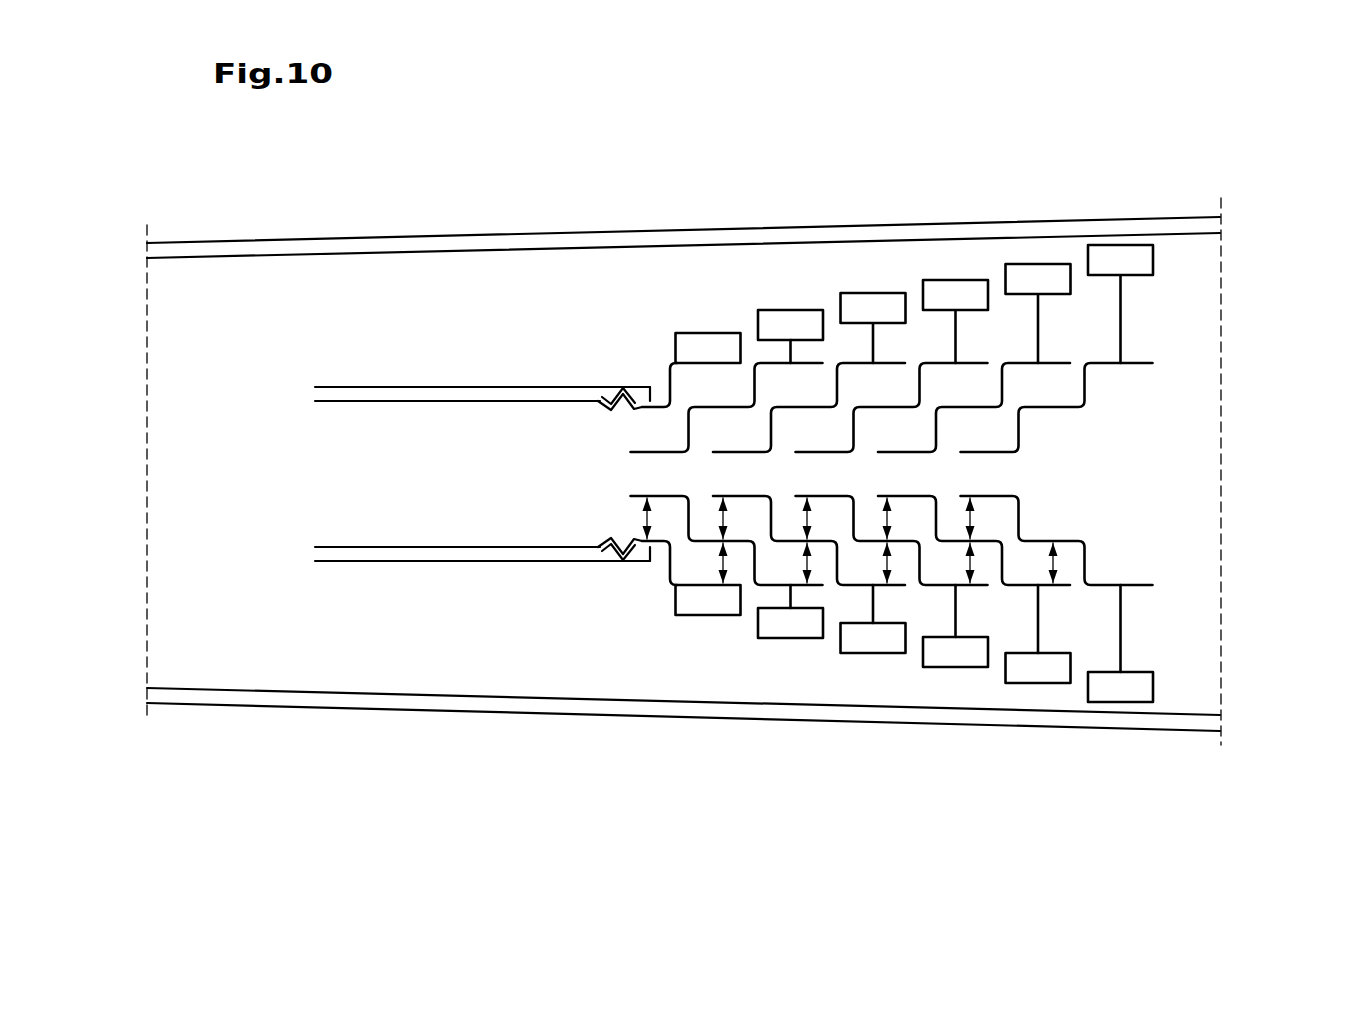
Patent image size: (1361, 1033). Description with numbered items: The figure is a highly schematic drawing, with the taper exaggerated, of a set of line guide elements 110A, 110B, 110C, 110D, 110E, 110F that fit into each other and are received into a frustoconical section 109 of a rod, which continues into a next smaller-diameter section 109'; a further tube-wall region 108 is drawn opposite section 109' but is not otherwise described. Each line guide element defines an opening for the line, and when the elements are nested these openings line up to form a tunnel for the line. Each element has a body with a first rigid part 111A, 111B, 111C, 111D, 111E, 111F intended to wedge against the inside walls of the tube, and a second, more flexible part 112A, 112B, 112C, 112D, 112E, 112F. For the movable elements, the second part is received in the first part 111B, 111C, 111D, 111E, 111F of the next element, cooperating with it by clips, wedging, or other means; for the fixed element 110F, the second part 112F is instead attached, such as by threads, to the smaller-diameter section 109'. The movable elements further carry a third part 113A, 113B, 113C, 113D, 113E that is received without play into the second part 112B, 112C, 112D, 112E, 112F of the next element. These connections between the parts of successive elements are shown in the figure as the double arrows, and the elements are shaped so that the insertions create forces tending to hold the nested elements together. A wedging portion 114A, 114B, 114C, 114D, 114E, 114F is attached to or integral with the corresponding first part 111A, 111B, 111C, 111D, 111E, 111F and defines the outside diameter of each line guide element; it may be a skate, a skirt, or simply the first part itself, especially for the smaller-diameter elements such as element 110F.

The second electrode layer 108 is at (596, 491).
The frustoconical section 109 is at (683, 445).
The next smaller-diameter section 109' is at (481, 360).
The line guide element 110A is at (1141, 338).
The line guide element 110B is at (1042, 286).
The line guide element 110C is at (930, 283).
The line guide element 110D is at (822, 281).
The line guide element 110E is at (730, 278).
The fixed line guide element 110F is at (650, 295).
The first rigid part 111A is at (1137, 587).
The first rigid part 111B is at (1060, 587).
The first rigid part 111C is at (977, 588).
The first rigid part 111D is at (862, 590).
The first rigid part 111E is at (778, 590).
The first rigid part 111F is at (639, 609).
The second more flexible part 112A is at (1067, 540).
The second more flexible part 112B is at (988, 541).
The second more flexible part 112C is at (905, 545).
The second more flexible part 112D is at (820, 543).
The second more flexible part 112E is at (700, 545).
The second more flexible part 112F is at (676, 585).
The third part 113A is at (993, 497).
The third part 113B is at (905, 497).
The third part 113C is at (820, 497).
The third part 113D is at (743, 497).
The third part 113E is at (636, 497).
The wedging portion 114A is at (1140, 260).
The wedging portion 114B is at (1059, 277).
The wedging portion 114C is at (974, 287).
The wedging portion 114D is at (897, 296).
The wedging portion 114E is at (812, 314).
The wedging portion 114F is at (711, 336).